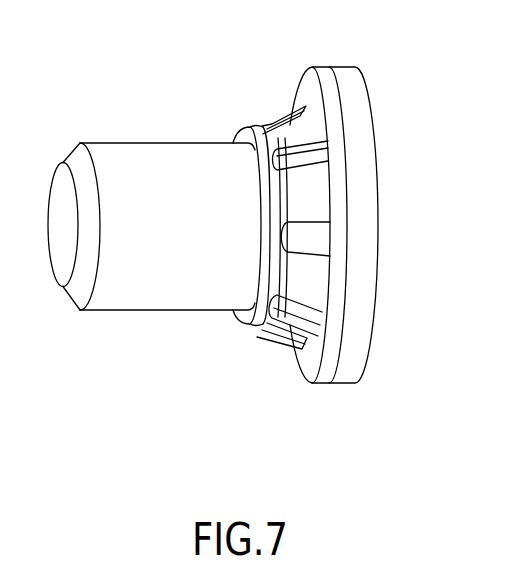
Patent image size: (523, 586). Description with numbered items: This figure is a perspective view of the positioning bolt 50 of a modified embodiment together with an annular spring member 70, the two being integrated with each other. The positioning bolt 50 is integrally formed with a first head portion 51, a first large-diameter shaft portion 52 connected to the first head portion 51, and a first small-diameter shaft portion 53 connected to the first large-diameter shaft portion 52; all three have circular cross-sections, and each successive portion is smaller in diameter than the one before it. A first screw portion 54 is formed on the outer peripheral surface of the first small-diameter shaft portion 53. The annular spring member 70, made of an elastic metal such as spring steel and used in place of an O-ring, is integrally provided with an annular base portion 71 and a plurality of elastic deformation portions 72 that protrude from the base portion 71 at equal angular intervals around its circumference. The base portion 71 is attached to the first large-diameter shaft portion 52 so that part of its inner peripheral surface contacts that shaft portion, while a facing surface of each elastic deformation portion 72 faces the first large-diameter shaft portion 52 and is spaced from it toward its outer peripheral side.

The positioning bolt 50 is at (127, 100).
The first head portion 51 is at (365, 192).
The first large-diameter shaft portion 52 is at (320, 155).
The first small-diameter shaft portion 53 is at (112, 311).
The first screw portion 54 is at (172, 311).
The annular spring member 70 is at (277, 345).
The base portion 71 is at (262, 170).
The elastic deformation portions 72 is at (323, 131).